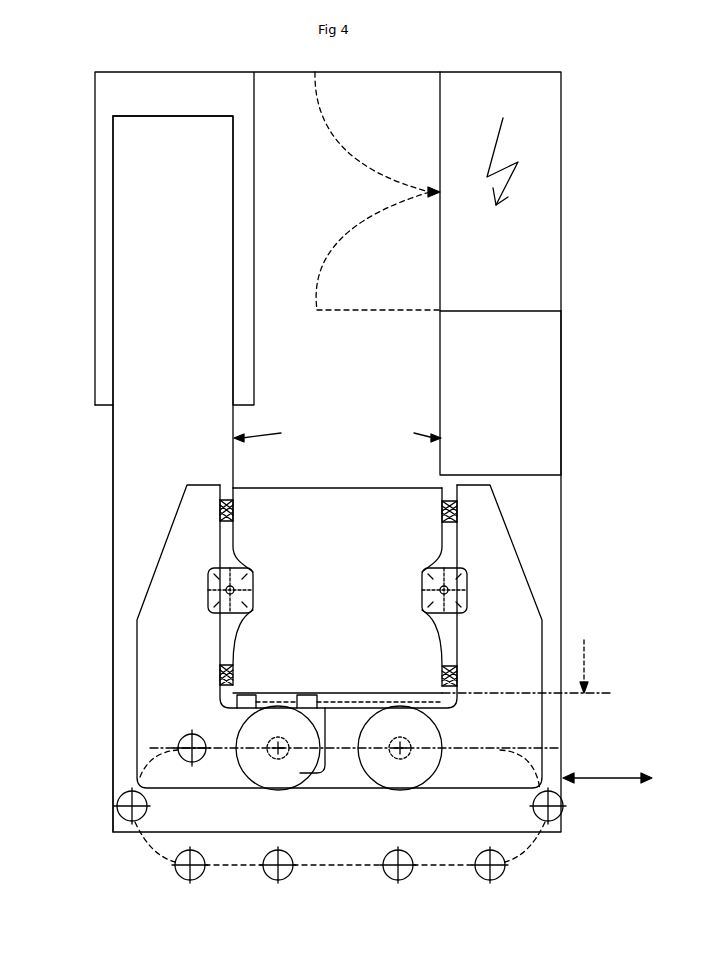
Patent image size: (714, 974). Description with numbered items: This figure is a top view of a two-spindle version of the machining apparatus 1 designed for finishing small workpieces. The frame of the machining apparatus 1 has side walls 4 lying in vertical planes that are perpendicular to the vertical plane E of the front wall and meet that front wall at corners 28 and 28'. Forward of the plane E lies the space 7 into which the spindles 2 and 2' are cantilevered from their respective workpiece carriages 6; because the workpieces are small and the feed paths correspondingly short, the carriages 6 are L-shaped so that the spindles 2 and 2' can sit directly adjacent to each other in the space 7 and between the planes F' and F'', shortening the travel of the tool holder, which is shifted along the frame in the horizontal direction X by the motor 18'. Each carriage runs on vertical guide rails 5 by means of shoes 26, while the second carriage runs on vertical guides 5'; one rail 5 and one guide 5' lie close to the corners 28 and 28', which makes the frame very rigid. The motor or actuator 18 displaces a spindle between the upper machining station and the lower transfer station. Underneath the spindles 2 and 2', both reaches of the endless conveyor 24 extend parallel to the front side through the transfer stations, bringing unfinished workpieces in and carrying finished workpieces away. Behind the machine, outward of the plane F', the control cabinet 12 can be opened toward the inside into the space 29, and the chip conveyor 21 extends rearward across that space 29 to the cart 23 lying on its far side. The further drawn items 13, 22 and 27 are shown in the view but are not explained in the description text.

The machining apparatus 1 is at (397, 488).
The spindle 2 is at (278, 759).
The spindle 2' is at (400, 759).
The side wall 4 is at (228, 550).
The vertical guide rail 5 is at (396, 640).
The vertical guide 5' is at (338, 513).
The workpiece carriage 6 is at (165, 588).
The space 7 is at (346, 757).
The control cabinet 12 is at (535, 218).
The control unit 13 is at (540, 394).
The motor or actuator 18 is at (244, 584).
The motor 18' is at (429, 586).
The chip conveyor 21 is at (165, 228).
The guide roller 22 is at (118, 806).
The cart 23 is at (155, 100).
The conveyor 24 is at (283, 880).
The shoe 26 is at (238, 546).
The detection region 27 is at (318, 348).
The corner 28 is at (269, 682).
The corner 28' is at (412, 682).
The space 29 is at (292, 115).
The vertical plane of the front wall E is at (583, 657).
The horizontal direction X is at (609, 769).
The plane F' is at (264, 434).
The force F'' is at (419, 433).